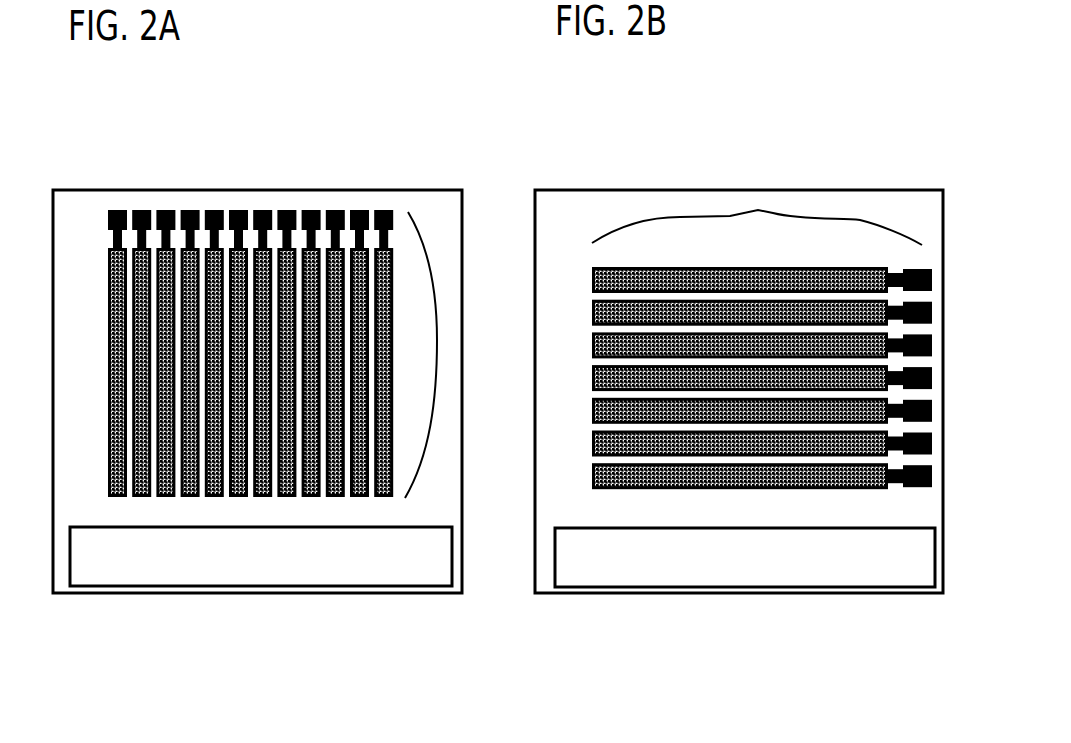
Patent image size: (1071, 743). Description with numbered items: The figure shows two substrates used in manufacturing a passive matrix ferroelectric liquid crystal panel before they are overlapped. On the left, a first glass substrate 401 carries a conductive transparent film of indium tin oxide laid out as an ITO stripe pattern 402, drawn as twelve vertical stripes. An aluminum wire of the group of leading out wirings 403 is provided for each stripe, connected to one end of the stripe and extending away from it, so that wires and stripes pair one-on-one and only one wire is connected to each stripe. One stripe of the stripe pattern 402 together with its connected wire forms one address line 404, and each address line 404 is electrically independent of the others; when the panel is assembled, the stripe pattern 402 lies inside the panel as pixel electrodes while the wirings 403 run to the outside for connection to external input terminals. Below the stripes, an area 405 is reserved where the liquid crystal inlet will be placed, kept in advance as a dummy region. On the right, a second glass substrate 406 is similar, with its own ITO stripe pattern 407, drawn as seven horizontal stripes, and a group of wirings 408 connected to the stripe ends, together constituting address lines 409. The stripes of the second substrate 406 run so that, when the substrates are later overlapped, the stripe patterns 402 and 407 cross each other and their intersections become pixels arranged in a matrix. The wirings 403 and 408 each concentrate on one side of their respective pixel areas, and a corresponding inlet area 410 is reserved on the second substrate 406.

In FIG. 2A, the first glass substrate 401 is at (84, 190).
In FIG. 2A, the ITO stripe pattern 402 is at (379, 297).
In FIG. 2A, the group of leading out wirings 403 is at (222, 212).
In FIG. 2A, the address line 404 is at (438, 357).
In FIG. 2A, the area for liquid crystal inlet 405 is at (162, 557).
In FIG. 2B, the second glass substrate 406 is at (592, 190).
In FIG. 2B, the ITO stripe pattern 407 is at (595, 483).
In FIG. 2B, the group of wirings 408 is at (915, 487).
In FIG. 2B, the address lines 409 is at (758, 210).
In FIG. 2B, the area for liquid crystal inlet 410 is at (668, 568).